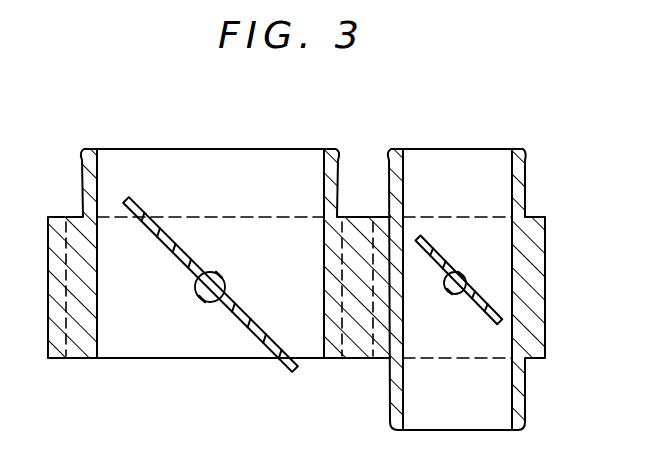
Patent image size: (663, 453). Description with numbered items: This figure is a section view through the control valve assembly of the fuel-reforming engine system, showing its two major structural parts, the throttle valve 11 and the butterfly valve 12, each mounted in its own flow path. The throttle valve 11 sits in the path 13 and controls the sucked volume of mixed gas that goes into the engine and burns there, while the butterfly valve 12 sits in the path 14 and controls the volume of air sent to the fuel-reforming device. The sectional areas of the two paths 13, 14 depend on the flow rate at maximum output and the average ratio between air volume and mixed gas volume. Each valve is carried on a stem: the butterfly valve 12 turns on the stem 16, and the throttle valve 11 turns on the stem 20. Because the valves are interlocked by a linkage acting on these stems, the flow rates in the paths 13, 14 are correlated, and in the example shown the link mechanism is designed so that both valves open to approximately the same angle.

The throttle valve 11 is at (131, 201).
The butterfly valve 12 is at (490, 306).
The path 13 is at (270, 163).
The path 14 is at (502, 199).
The stem 16 is at (458, 300).
The stem 20 is at (208, 305).